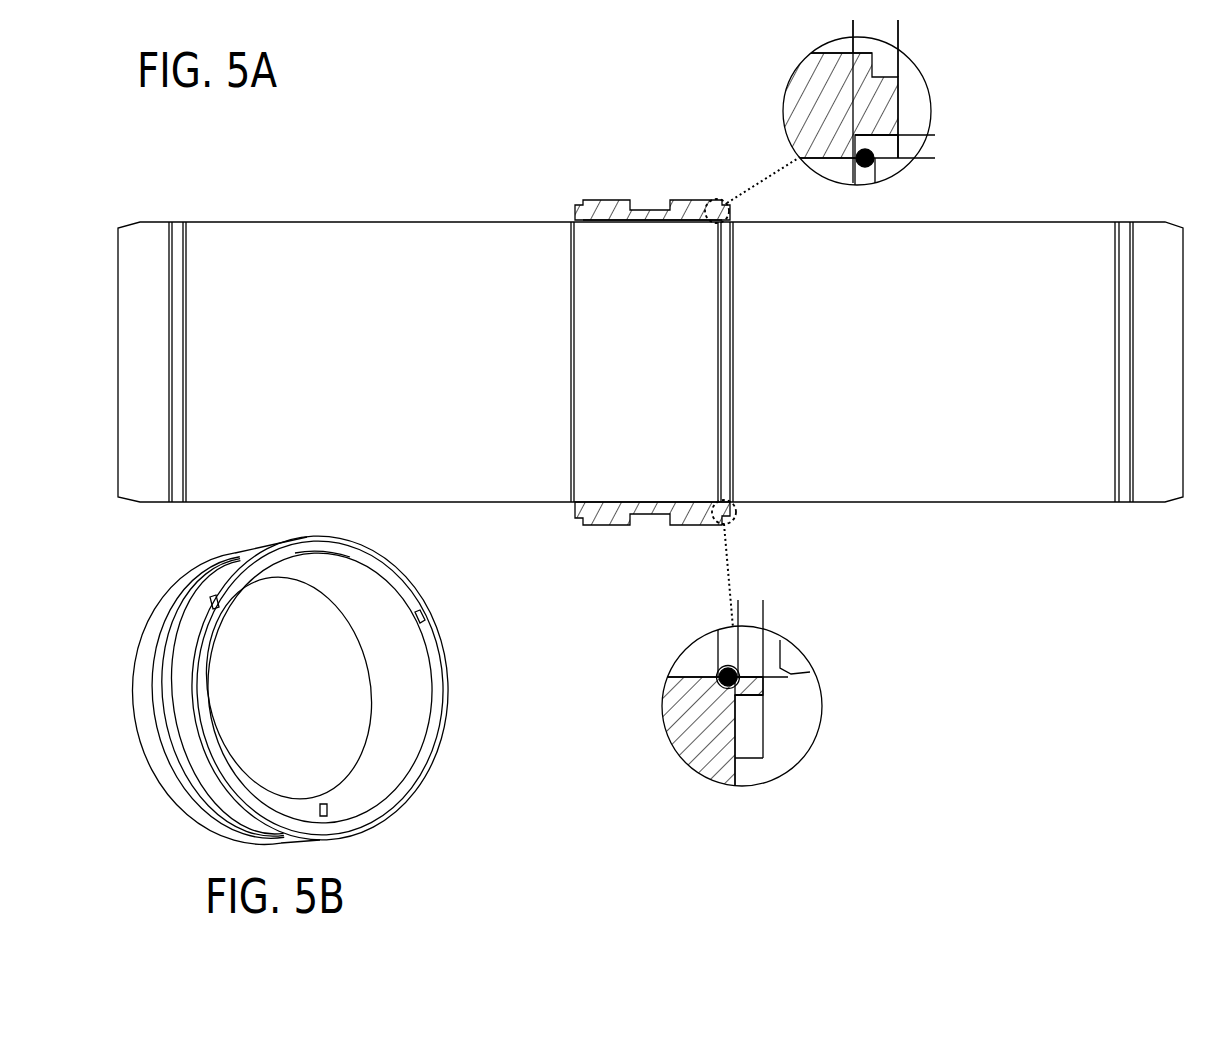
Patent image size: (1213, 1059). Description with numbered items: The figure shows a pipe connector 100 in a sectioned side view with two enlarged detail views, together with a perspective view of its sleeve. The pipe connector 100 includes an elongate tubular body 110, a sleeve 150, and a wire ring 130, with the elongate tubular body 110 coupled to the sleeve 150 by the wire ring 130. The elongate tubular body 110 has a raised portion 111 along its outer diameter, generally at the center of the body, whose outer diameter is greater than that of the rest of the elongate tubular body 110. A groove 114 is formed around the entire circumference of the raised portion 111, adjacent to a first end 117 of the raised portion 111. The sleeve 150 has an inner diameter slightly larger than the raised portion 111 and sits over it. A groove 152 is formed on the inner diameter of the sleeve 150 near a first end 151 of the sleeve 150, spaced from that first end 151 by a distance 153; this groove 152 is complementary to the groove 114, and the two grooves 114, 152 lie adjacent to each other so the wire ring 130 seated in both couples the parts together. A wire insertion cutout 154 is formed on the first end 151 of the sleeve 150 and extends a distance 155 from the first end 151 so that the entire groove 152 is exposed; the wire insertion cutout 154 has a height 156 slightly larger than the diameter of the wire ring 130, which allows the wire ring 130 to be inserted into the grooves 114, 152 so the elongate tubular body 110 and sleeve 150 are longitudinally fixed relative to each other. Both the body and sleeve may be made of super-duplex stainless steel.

In FIG. 5A, the pipe connector 100 is at (650, 287).
In FIG. 5A, the elongate tubular body 110 is at (415, 258).
In FIG. 5A, the raised portion 111 is at (628, 222).
In FIG. 5A, the groove 114 is at (865, 177).
In FIG. 5A, the first end 117 is at (723, 227).
In FIG. 5A, the wire ring 130 is at (855, 152).
In FIG. 5A, the sleeve 150 is at (593, 197).
In FIG. 5B, the sleeve 150 is at (272, 686).
In FIG. 5A, the first end 151 is at (870, 127).
In FIG. 5B, the first end 151 is at (410, 768).
In FIG. 5A, the groove 152 is at (733, 692).
In FIG. 5B, the groove 152 is at (412, 610).
In FIG. 5A, the distance 153 is at (722, 612).
In FIG. 5A, the wire insertion cutout 154 is at (885, 145).
In FIG. 5B, the wire insertion cutout 154 is at (350, 558).
In FIG. 5A, the distance 155 is at (835, 20).
In FIG. 5A, the height 156 is at (933, 112).